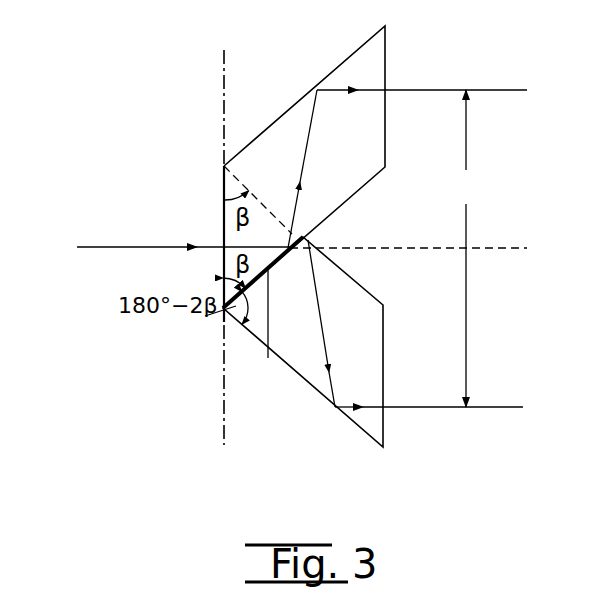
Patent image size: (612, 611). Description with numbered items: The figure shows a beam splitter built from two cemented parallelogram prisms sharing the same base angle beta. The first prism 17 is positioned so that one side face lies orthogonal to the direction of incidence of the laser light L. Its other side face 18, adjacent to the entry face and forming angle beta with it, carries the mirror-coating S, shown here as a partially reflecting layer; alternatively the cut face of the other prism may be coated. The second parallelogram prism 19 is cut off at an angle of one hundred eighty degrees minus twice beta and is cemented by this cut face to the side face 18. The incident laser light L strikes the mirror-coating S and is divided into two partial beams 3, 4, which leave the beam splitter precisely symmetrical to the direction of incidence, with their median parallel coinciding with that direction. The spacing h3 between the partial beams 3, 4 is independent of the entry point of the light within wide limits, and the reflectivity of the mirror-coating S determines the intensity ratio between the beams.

The partial beam 3 is at (407, 153).
The partial beam 4 is at (415, 343).
The first prism 17 is at (370, 133).
The side face 18 is at (343, 198).
The second parallelogram prism 19 is at (370, 345).
The mirror-coating S is at (265, 329).
The laser light L is at (302, 267).
The spacing h3 is at (470, 248).